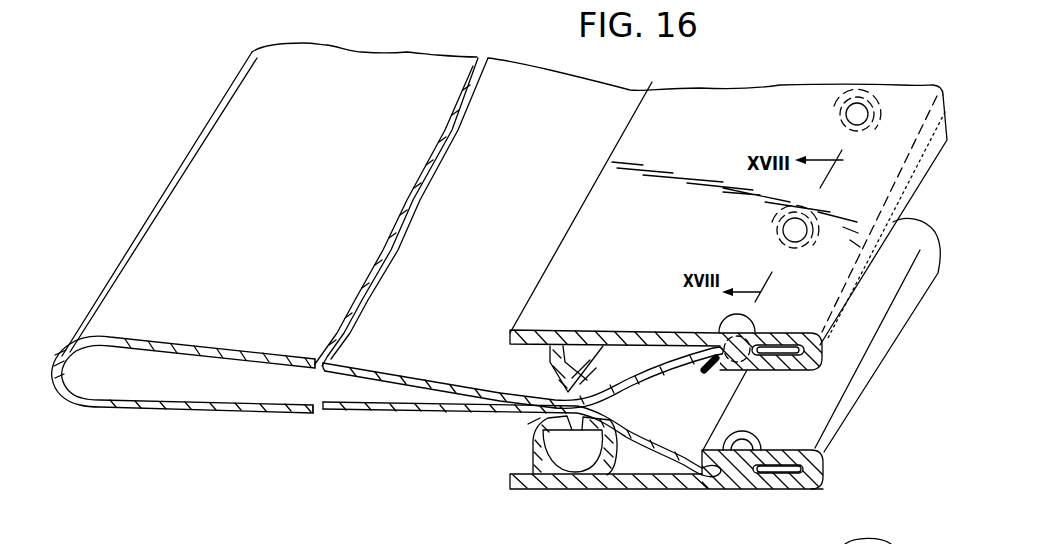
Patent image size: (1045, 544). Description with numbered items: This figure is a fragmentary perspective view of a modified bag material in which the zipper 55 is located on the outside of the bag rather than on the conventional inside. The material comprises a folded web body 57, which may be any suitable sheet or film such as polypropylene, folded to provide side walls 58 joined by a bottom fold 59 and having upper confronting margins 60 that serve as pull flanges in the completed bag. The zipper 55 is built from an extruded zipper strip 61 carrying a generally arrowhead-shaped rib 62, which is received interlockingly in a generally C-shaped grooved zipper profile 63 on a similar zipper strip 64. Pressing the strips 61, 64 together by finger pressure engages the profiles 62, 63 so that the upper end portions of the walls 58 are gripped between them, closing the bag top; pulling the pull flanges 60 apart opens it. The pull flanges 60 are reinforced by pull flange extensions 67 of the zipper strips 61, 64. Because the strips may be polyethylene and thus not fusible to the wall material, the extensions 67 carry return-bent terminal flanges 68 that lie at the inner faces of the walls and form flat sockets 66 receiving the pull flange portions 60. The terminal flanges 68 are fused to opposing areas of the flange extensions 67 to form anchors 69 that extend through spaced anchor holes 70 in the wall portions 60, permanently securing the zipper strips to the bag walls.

The zipper 55 is at (527, 425).
The folded web body 57 is at (157, 418).
The side walls 58 is at (326, 405).
The bottom fold 59 is at (55, 362).
The confronting margins 60 is at (790, 450).
The extruded zipper strip 61 is at (555, 280).
The arrowhead shape cross section profile rib 62 is at (560, 368).
The C-shaped cross section grooved zipper profile 63 is at (540, 438).
The zipper strip 64 is at (606, 481).
The flat sockets 66 is at (818, 350).
The pull flange extensions 67 is at (694, 332).
The terminal flanges 68 is at (772, 450).
The anchors 69 is at (790, 227).
The anchor holes 70 is at (760, 489).